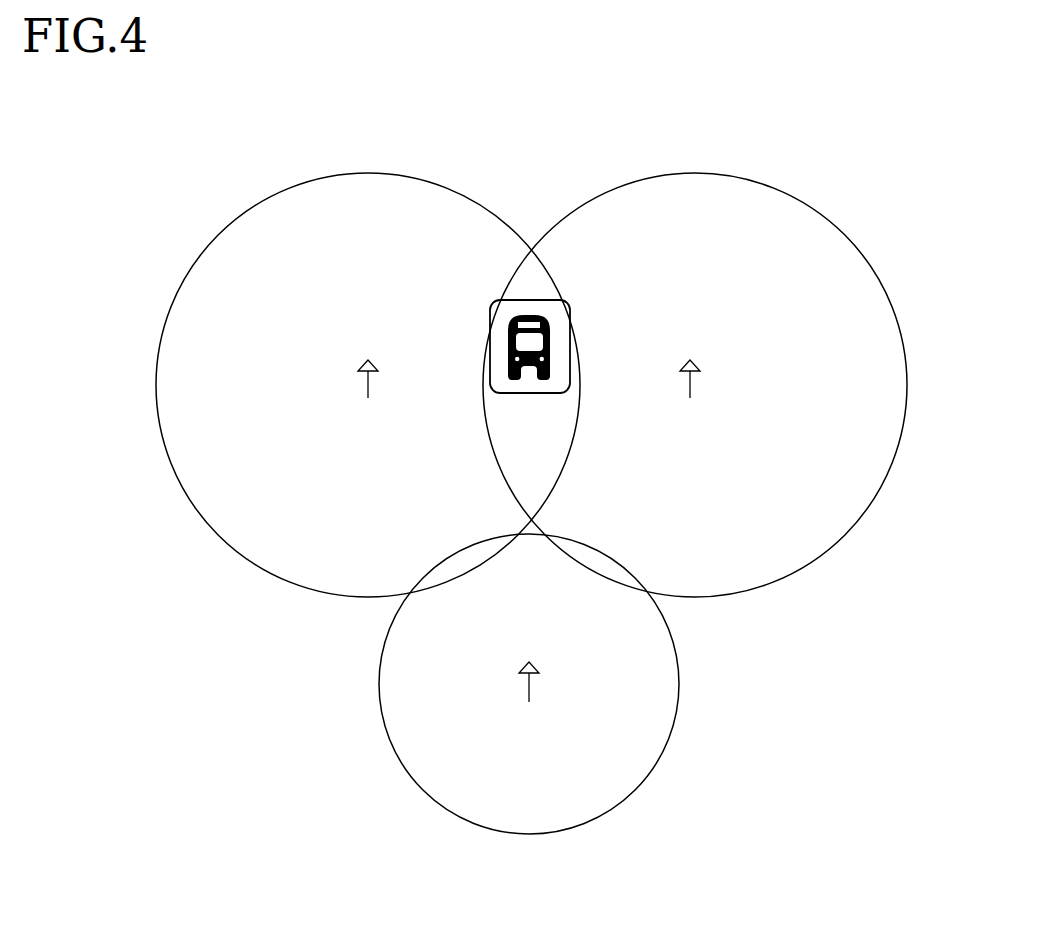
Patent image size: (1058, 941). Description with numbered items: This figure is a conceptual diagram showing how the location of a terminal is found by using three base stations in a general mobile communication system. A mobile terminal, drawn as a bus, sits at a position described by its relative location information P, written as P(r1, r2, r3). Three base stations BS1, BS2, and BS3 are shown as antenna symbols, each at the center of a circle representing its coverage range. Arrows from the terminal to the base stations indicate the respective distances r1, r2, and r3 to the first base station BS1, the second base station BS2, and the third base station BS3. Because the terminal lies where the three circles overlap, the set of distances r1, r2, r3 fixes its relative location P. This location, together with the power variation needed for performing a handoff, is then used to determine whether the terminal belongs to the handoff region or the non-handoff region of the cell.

The first base station BS1 is at (368, 397).
The second base station BS2 is at (690, 397).
The third base station BS3 is at (529, 698).
The distance to first base station r1 is at (490, 348).
The distance to second base station r2 is at (570, 350).
The distance to third base station r3 is at (529, 393).
The relative location information P is at (556, 378).